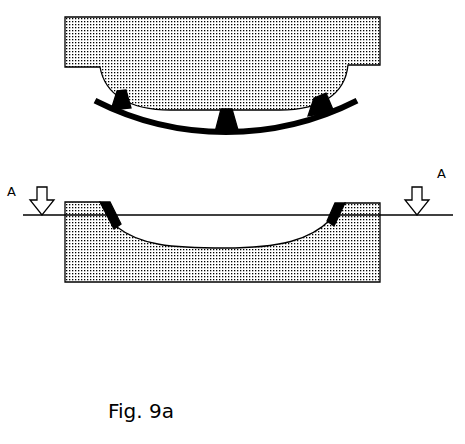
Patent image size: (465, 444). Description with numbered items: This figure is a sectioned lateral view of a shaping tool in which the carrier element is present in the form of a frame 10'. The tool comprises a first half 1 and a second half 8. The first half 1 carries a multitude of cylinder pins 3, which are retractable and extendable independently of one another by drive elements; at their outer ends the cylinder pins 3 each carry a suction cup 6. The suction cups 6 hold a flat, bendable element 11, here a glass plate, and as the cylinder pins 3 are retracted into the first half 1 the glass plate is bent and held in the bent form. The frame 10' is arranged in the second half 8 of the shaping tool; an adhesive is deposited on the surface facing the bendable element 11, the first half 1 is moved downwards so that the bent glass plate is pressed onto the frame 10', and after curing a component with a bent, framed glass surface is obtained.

The first half of the shaping tool 1 is at (382, 35).
The cylinder pins 3 is at (333, 94).
The flat, bendable element 11 is at (357, 103).
The suction cups 6 is at (336, 118).
The second half of the shaping tool 8 is at (380, 250).
The frame 10' is at (240, 261).